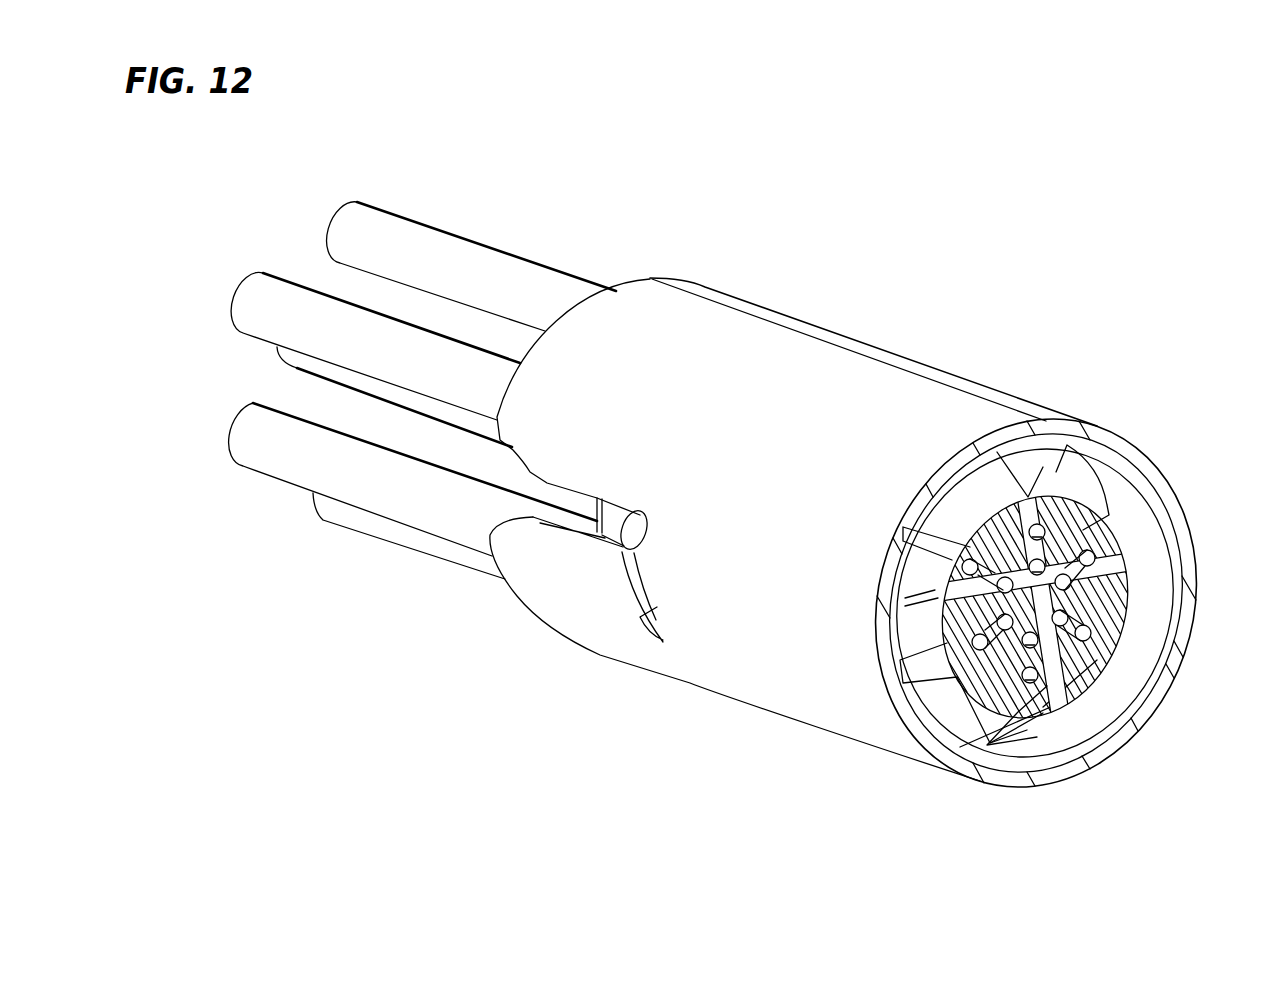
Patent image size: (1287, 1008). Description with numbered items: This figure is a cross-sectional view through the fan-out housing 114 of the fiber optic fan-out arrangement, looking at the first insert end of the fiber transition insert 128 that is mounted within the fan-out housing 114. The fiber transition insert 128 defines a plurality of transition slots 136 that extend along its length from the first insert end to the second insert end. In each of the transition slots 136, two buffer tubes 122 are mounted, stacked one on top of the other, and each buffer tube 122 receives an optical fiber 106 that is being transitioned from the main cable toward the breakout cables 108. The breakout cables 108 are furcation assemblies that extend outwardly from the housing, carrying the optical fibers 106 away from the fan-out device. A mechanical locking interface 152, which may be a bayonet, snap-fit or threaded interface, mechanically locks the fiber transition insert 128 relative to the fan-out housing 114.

The optical fibers 106 is at (1040, 527).
The breakout cables 108 is at (464, 211).
The fan-out housing 114 is at (881, 322).
The buffer tube 122 is at (947, 562).
The fiber transition insert 128 is at (1118, 455).
The transition slots 136 is at (1020, 445).
The mechanical locking interface 152 is at (630, 474).